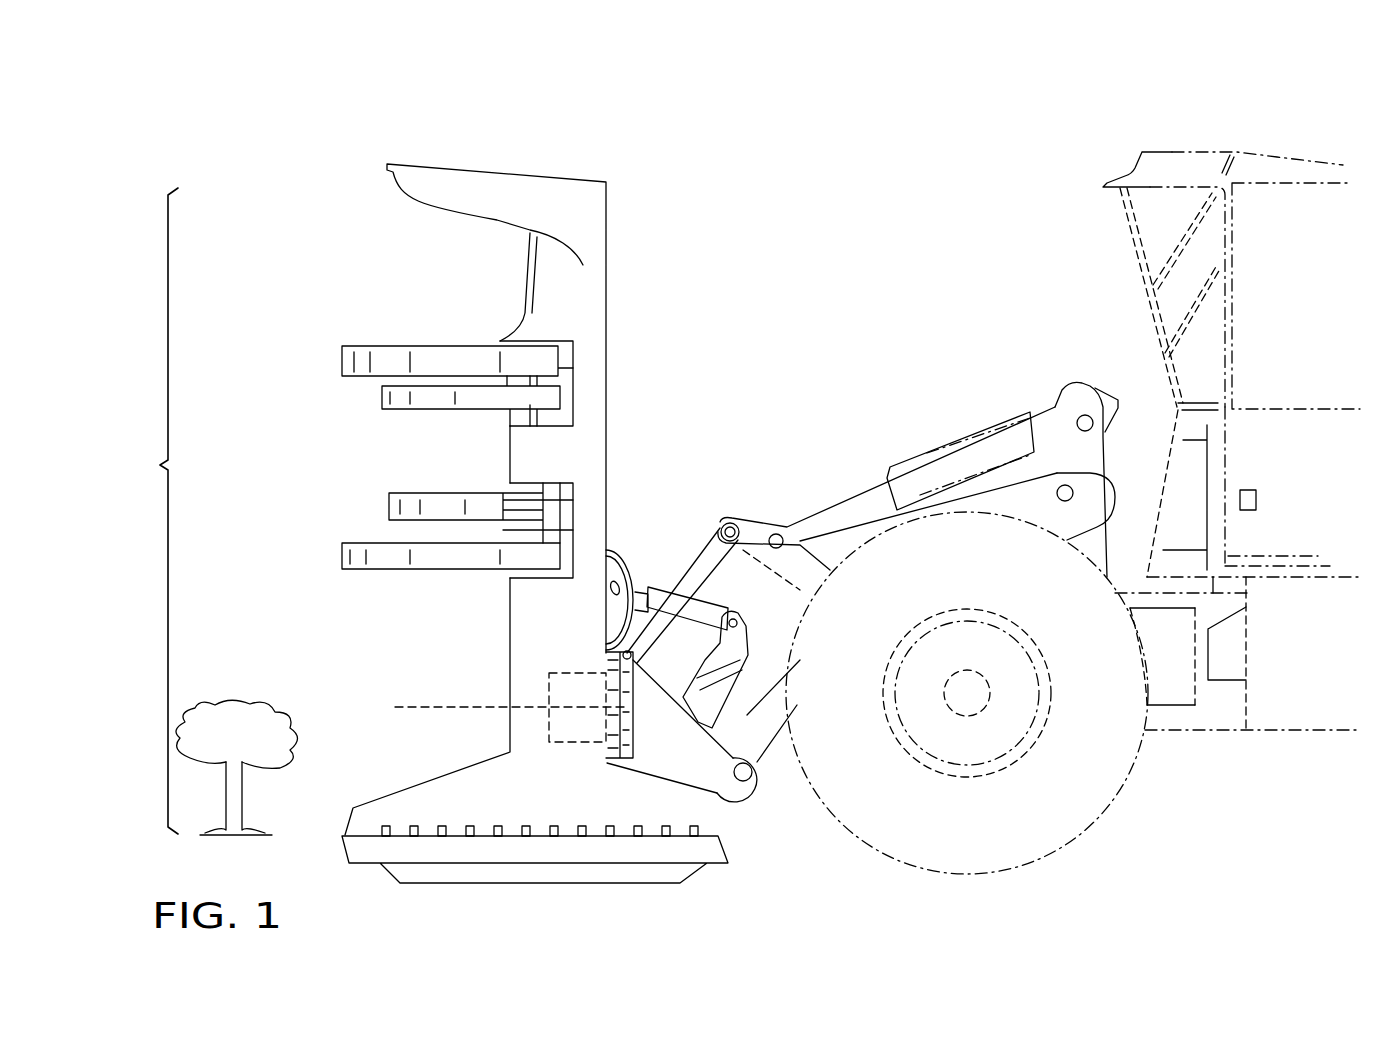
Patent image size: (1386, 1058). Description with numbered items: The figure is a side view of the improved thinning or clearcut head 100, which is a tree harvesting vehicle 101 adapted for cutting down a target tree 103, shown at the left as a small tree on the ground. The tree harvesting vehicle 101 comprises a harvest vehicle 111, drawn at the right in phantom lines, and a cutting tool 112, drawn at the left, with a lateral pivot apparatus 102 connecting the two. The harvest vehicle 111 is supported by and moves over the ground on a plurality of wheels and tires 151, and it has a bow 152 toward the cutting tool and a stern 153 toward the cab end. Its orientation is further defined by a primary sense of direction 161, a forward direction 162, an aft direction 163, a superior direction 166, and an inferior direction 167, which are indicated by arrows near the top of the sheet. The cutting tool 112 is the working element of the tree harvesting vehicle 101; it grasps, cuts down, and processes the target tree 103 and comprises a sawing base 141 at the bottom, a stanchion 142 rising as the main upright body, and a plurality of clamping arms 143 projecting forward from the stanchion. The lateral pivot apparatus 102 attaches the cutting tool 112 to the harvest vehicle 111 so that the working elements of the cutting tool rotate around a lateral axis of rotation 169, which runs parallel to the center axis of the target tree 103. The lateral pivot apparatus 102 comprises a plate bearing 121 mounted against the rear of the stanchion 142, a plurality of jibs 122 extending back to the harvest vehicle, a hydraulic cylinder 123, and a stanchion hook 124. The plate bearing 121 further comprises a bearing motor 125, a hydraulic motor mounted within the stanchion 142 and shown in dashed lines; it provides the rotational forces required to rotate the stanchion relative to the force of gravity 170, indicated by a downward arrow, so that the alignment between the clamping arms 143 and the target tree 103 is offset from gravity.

The improved thinning or clearcut head 100 is at (208, 168).
The tree harvesting vehicle 101 is at (139, 511).
The lateral pivot apparatus 102 is at (702, 505).
The target tree 103 is at (235, 795).
The harvest vehicle 111 is at (1355, 143).
The cutting tool 112 is at (725, 143).
The plate bearing 121 is at (612, 754).
The jibs 122 is at (692, 757).
The hydraulic cylinder 123 is at (660, 596).
The stanchion hook 124 is at (742, 643).
The bearing motor 125 is at (565, 745).
The sawing base 141 is at (500, 883).
The stanchion 142 is at (588, 318).
The clamping arms 143 is at (325, 352).
The wheels and tires 151 is at (970, 845).
The bow 152 is at (1020, 358).
The stern 153 is at (1364, 301).
The primary sense of direction 161 is at (1165, 888).
The forward direction 162 is at (328, 85).
The aft direction 163 is at (328, 85).
The superior direction 166 is at (328, 85).
The inferior direction 167 is at (328, 85).
The lateral axis of rotation 169 is at (473, 690).
The force of gravity 170 is at (1355, 868).